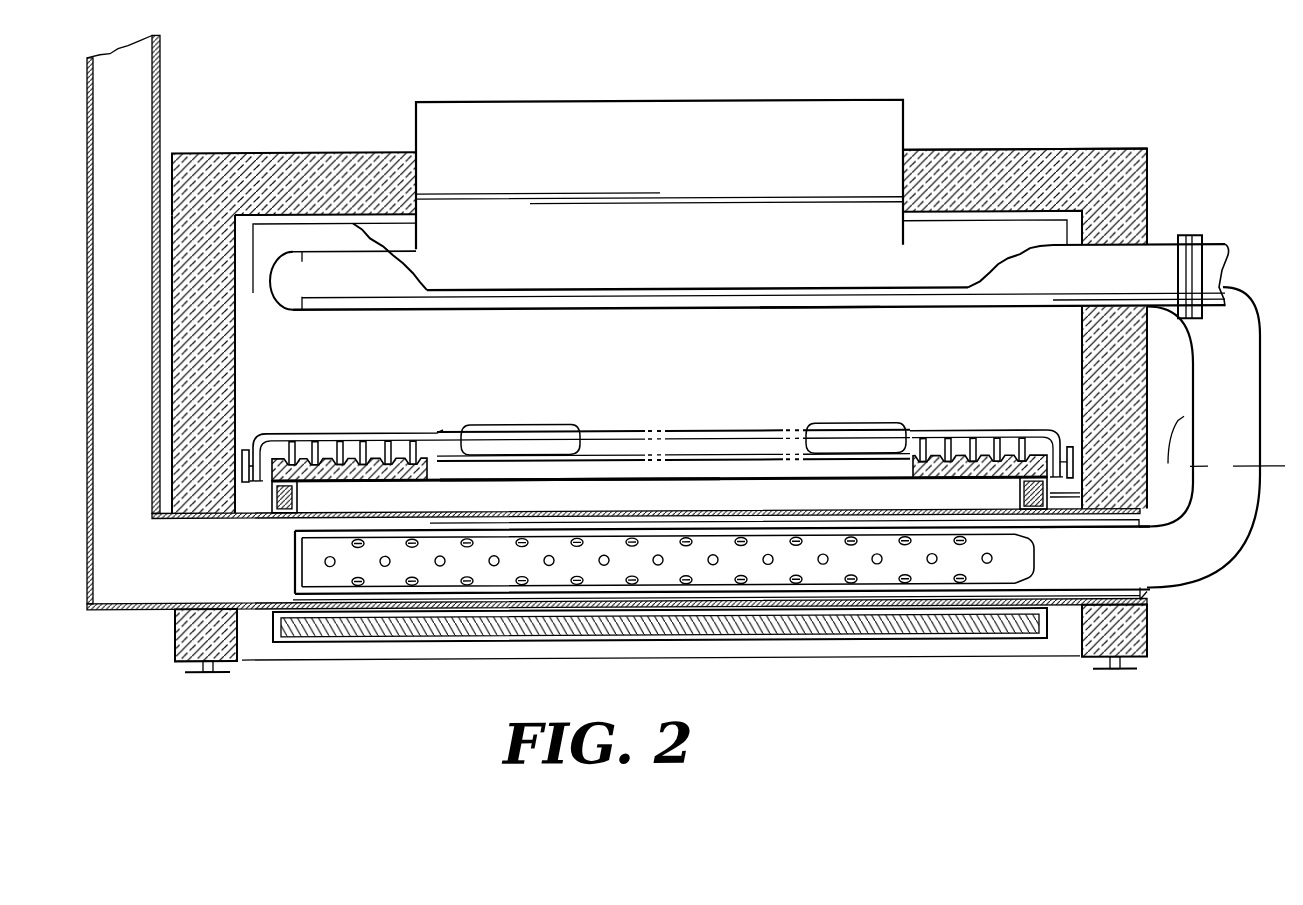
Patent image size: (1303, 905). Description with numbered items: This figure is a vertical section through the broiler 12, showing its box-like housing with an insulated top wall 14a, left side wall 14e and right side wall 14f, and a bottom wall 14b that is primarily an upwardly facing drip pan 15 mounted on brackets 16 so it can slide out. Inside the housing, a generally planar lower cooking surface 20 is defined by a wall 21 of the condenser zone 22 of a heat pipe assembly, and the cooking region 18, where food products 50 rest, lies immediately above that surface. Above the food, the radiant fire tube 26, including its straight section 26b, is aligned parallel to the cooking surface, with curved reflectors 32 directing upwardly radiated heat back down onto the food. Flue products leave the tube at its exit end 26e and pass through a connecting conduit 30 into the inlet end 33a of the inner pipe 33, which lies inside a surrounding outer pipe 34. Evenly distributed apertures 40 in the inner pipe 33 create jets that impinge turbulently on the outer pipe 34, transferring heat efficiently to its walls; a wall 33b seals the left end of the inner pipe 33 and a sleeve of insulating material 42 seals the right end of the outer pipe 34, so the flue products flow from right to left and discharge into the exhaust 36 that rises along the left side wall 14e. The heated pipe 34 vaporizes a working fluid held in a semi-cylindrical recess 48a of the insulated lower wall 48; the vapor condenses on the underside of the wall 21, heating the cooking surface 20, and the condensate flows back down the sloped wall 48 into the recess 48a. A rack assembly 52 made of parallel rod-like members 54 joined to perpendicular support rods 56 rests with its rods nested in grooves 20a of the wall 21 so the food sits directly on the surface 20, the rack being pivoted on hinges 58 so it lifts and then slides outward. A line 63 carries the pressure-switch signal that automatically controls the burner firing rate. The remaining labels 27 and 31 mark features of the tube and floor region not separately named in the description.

The broiler 12 is at (957, 118).
The top wall 14a is at (355, 152).
The bottom wall 14b is at (478, 668).
The left side wall 14e is at (238, 362).
The right side wall 14f is at (1081, 366).
The drip pan 15 is at (886, 664).
The brackets 16 is at (243, 662).
The cooking region 18 is at (674, 416).
The lower cooking surface 20 is at (380, 440).
The grooves 20a is at (394, 482).
The wall 21 is at (657, 474).
The condenser zone 22 is at (847, 510).
The U-shaped tube 26 is at (372, 318).
The straight section 26b is at (1062, 287).
The exit end 26e is at (1158, 246).
The tube bottom wall 27 is at (826, 323).
The connecting conduit 30 is at (1242, 535).
The floor 31 is at (516, 505).
The curved reflector 32 is at (950, 266).
The inner pipe 33 is at (559, 518).
The inlet end 33a is at (1092, 578).
The wall 33b is at (295, 563).
The outer pipe 34 is at (246, 522).
The exhaust 36 is at (160, 99).
The apertures 40 is at (536, 564).
The sleeve of insulating material 42 is at (1147, 604).
The insulated lower wall 48 is at (1020, 494).
The semi-cylindrical recess 48a is at (742, 648).
The food products 50 is at (540, 428).
The rack assembly 52 is at (955, 425).
The rod-like members 54 is at (396, 440).
The support rods 56 is at (938, 441).
The hinges 58 is at (246, 449).
The line 63 is at (1172, 452).